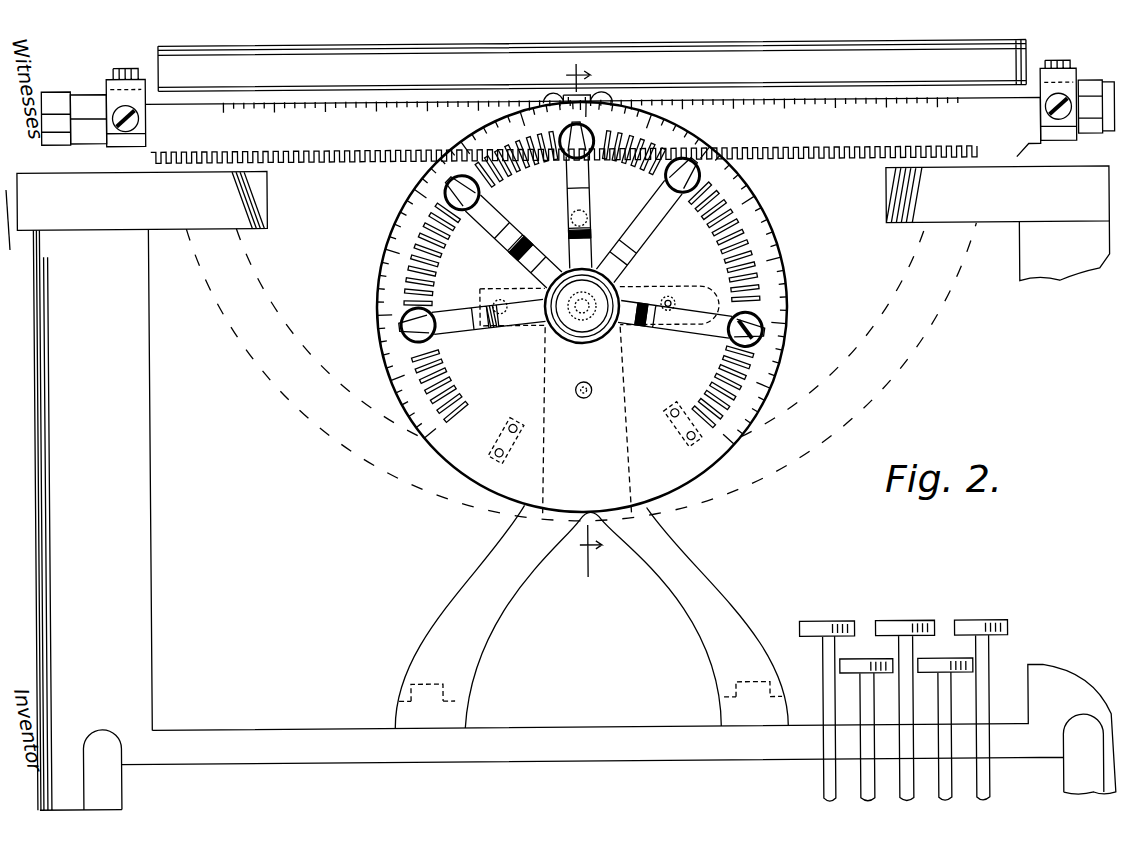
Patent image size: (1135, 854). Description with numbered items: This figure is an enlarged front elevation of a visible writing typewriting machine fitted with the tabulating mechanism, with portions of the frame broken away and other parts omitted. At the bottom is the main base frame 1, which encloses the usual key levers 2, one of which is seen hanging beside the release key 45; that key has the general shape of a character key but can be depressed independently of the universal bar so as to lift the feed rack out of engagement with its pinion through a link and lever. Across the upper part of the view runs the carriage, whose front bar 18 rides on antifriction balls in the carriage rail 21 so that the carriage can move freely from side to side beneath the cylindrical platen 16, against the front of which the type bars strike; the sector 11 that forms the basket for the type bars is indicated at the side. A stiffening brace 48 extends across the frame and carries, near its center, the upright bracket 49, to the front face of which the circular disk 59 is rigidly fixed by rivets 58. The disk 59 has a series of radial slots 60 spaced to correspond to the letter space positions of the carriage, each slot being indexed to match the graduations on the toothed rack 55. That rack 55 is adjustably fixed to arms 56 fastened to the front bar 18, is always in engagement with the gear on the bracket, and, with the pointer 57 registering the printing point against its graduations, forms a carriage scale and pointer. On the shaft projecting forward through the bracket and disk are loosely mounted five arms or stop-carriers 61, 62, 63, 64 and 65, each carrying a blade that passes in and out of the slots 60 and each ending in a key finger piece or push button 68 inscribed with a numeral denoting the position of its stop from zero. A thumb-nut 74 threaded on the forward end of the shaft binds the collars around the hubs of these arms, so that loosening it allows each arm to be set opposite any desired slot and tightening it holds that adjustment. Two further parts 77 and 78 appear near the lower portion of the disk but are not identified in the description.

The main base frame 1 is at (106, 795).
The key levers 2 is at (860, 706).
The sector 11 is at (582, 373).
The platen 16 is at (738, 43).
The front bar 18 is at (57, 98).
The carriage rail 21 is at (90, 138).
The release key 45 is at (982, 623).
The stiffening brace 48 is at (618, 733).
The upright bracket 49 is at (591, 615).
The toothed rack 55 is at (592, 129).
The arms 56 is at (116, 80).
The pointer 57 is at (600, 90).
The rivets 58 is at (672, 296).
The circular disk 59 is at (586, 421).
The radial slots 60 is at (724, 251).
The arm or stop-carrier 61 is at (708, 316).
The arm or stop-carrier 62 is at (664, 214).
The arm or stop-carrier 63 is at (590, 180).
The arm or stop-carrier 64 is at (512, 226).
The arm or stop-carrier 65 is at (476, 302).
The key finger piece or push button 68 is at (566, 153).
The thumb-nut 74 is at (618, 336).
The stop 77 is at (510, 418).
The stop 78 is at (667, 416).